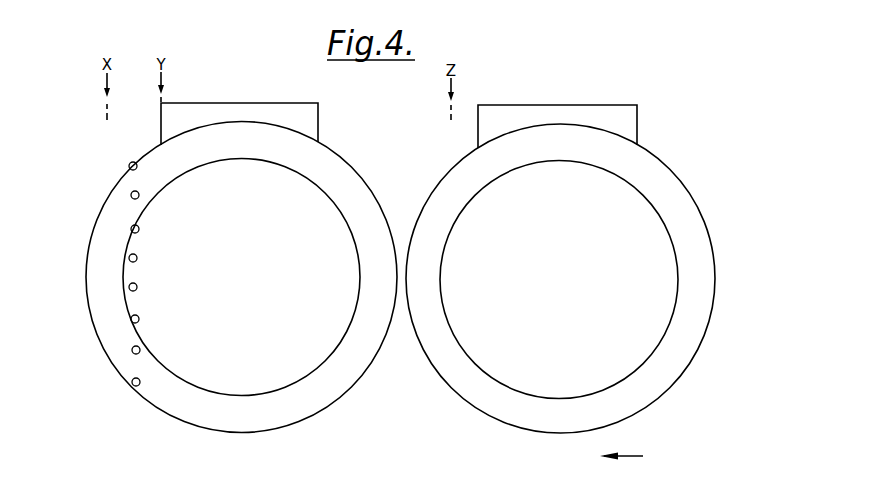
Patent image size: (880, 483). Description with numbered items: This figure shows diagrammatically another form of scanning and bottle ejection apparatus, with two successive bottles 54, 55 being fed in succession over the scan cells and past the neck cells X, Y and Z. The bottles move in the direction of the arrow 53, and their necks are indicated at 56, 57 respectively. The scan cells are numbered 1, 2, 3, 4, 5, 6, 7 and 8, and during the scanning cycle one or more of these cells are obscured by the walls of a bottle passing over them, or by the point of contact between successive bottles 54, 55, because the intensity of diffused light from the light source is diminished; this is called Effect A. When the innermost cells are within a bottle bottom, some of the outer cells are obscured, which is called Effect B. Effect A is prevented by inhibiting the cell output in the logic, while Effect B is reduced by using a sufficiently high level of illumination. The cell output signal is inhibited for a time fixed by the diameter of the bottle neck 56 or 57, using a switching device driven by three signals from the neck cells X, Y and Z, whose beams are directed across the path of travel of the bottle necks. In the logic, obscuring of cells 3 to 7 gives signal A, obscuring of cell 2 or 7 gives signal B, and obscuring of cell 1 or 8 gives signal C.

The scan cell 1 is at (140, 168).
The scan cell 2 is at (141, 187).
The scan cell 3 is at (142, 231).
The scan cell 4 is at (141, 260).
The scan cell 5 is at (141, 289).
The scan cell 6 is at (142, 321).
The scan cell 7 is at (141, 360).
The scan cell 8 is at (142, 385).
The arrow 53 is at (622, 456).
The bottle 54 is at (335, 155).
The bottle 55 is at (657, 162).
The neck 56 is at (342, 198).
The neck 57 is at (660, 208).